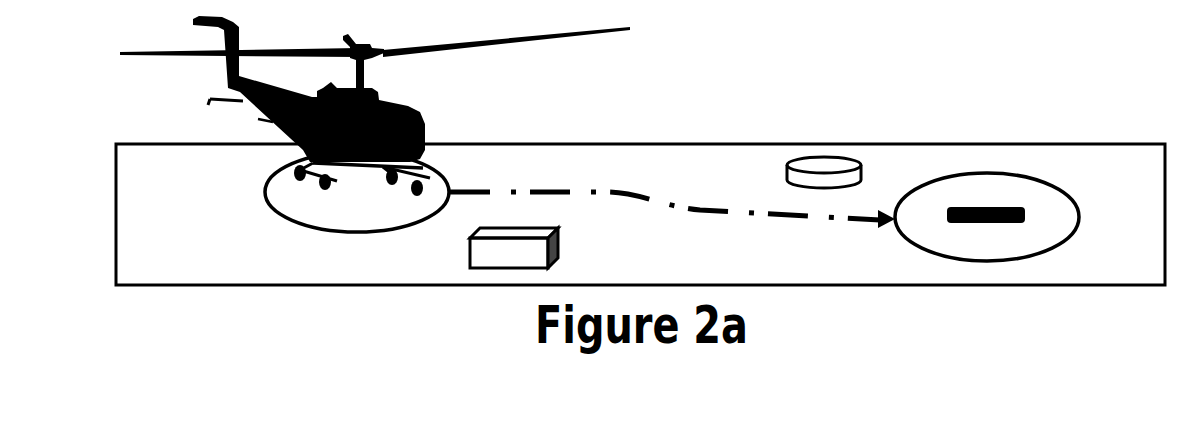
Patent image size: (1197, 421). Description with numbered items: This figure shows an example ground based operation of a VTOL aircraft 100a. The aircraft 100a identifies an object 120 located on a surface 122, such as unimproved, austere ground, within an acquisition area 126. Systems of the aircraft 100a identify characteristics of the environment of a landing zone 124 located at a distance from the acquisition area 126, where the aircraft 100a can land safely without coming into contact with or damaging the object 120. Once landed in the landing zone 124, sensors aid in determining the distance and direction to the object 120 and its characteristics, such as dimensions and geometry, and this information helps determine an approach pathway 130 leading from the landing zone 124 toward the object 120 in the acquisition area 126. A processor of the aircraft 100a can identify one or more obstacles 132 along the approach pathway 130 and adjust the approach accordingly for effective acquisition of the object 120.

The VTOL aircraft 100a is at (262, 117).
The object 120 is at (988, 226).
The surface 122 is at (168, 290).
The landing zone 124 is at (360, 235).
The acquisition area 126 is at (903, 240).
The approach pathway 130 is at (652, 200).
The obstacles 132 is at (495, 268).